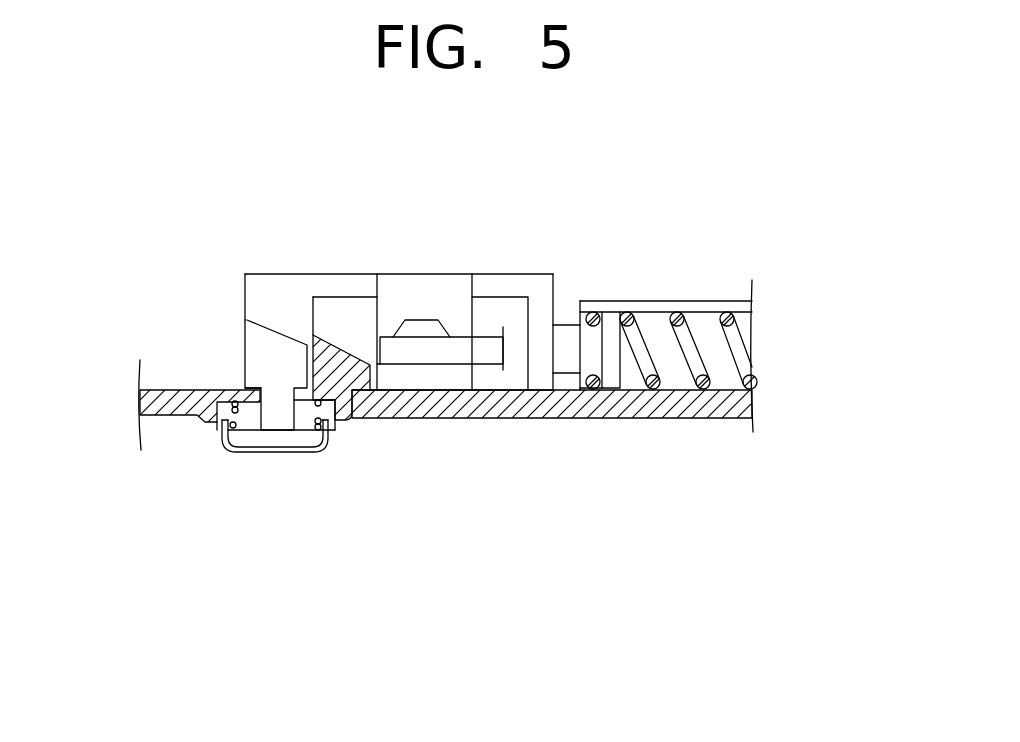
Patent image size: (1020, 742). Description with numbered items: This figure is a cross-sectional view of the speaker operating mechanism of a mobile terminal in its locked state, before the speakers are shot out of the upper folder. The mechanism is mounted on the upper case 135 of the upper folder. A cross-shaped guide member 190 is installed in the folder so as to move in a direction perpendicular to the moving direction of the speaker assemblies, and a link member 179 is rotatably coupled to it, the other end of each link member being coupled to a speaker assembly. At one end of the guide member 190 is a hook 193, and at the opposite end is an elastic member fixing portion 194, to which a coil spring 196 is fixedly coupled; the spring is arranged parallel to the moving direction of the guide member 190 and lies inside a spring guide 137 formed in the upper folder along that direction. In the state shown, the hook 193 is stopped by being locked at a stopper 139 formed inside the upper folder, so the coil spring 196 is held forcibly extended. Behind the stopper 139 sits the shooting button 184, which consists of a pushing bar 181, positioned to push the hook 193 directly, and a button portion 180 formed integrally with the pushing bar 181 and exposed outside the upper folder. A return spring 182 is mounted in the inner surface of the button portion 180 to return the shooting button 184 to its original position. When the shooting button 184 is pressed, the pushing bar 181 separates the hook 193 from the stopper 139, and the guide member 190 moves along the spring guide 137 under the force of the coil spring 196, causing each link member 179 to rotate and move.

The upper case 135 is at (698, 407).
The spring guide 137 is at (616, 300).
The stopper 139 is at (333, 360).
The link member 179 is at (427, 350).
The button portion 180 is at (267, 438).
The pushing bar 181 is at (258, 350).
The return spring 182 is at (224, 406).
The shooting button 184 is at (241, 462).
The guide member 190 is at (509, 262).
The hook 193 is at (275, 302).
The elastic member fixing portion 194 is at (610, 375).
The coil spring 196 is at (677, 319).